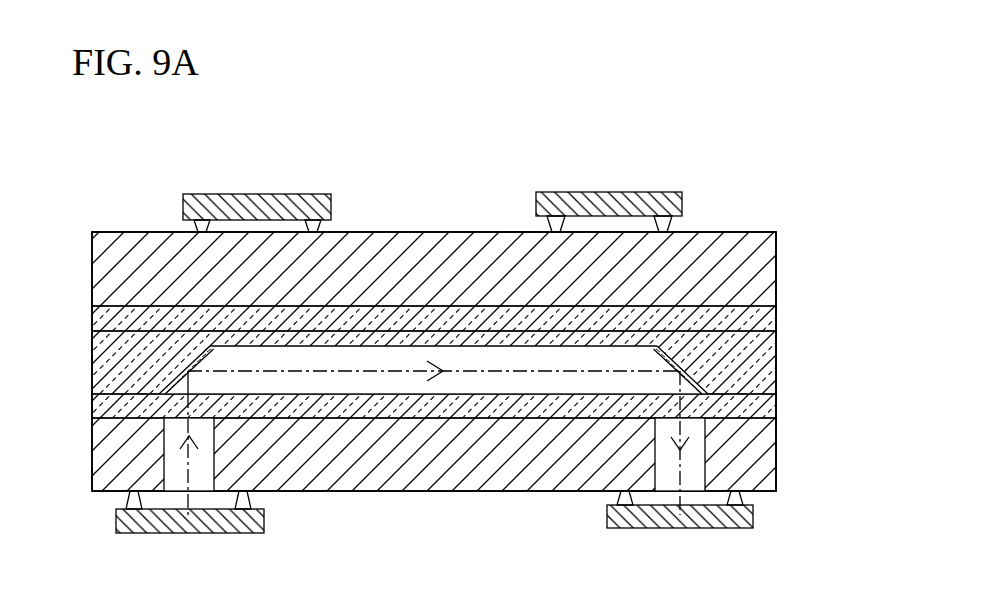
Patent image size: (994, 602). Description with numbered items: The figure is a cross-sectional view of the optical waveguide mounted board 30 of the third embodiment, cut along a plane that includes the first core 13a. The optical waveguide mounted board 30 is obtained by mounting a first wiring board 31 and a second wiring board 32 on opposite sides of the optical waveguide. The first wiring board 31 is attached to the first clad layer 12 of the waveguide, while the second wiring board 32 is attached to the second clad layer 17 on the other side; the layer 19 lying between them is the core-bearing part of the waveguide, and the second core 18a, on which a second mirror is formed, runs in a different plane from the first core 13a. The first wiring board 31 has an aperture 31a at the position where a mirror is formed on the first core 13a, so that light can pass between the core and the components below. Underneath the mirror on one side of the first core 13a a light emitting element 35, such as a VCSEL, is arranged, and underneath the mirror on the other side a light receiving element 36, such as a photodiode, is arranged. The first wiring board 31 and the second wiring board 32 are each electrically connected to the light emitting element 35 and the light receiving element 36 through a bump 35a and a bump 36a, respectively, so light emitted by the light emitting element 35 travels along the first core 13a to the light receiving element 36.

The optical waveguide mounted board 30 is at (96, 148).
The second wiring board 32 is at (768, 262).
The second clad layer 17 is at (768, 310).
The core layer 19 is at (768, 362).
The first core 13a is at (462, 380).
The first clad layer 12 is at (768, 400).
The first wiring board 31 is at (768, 452).
The aperture 31a is at (165, 455).
The light emitting element 35 is at (260, 202).
The bump 35a is at (198, 228).
The light receiving element 36 is at (598, 198).
The bump 36a is at (550, 227).
The second core 18a is at (501, 206).